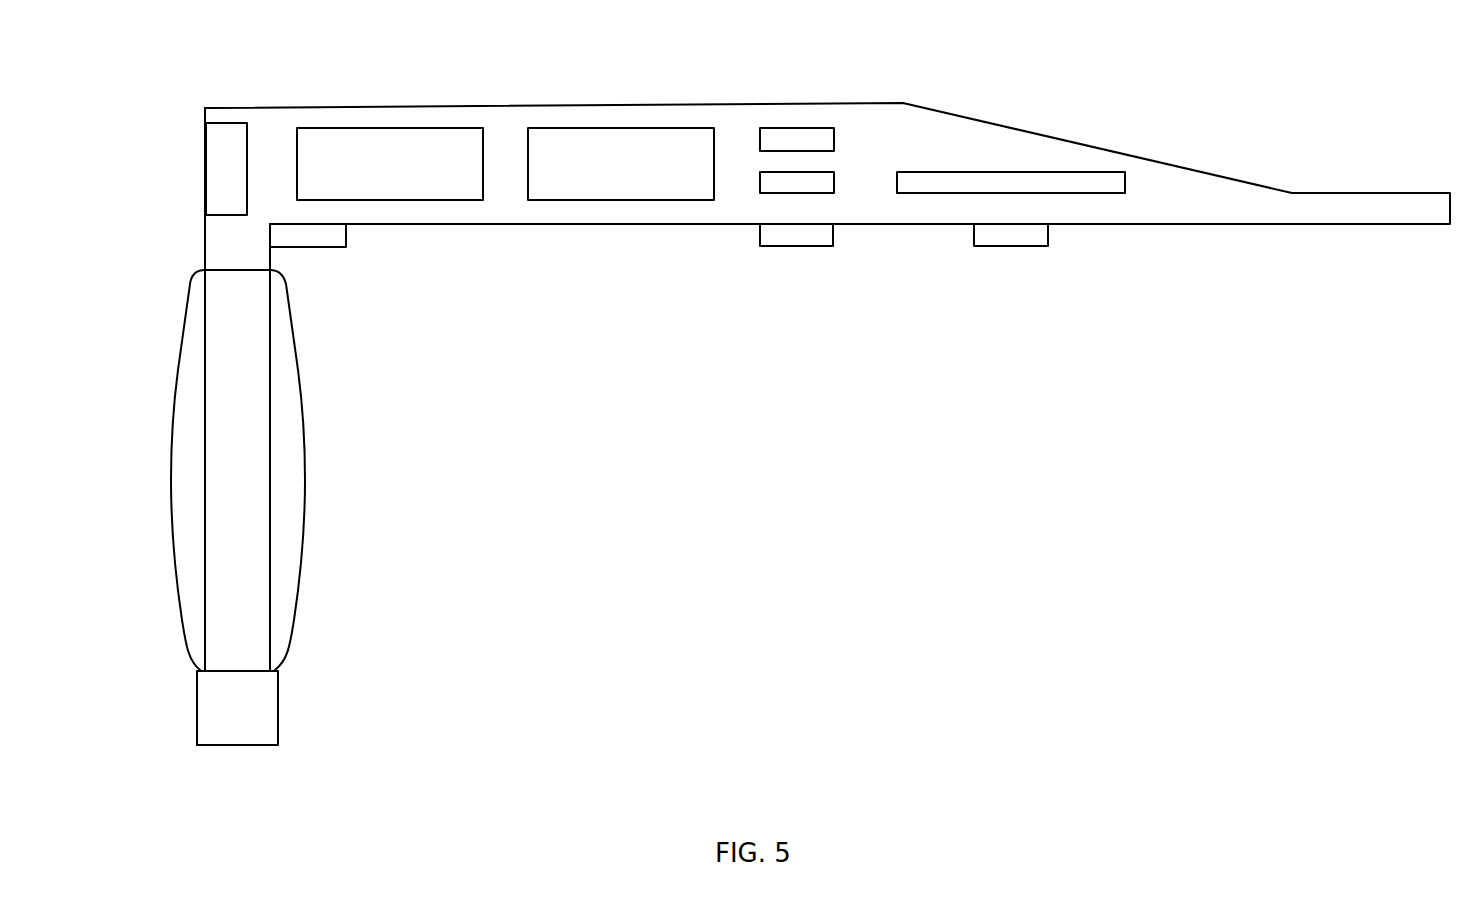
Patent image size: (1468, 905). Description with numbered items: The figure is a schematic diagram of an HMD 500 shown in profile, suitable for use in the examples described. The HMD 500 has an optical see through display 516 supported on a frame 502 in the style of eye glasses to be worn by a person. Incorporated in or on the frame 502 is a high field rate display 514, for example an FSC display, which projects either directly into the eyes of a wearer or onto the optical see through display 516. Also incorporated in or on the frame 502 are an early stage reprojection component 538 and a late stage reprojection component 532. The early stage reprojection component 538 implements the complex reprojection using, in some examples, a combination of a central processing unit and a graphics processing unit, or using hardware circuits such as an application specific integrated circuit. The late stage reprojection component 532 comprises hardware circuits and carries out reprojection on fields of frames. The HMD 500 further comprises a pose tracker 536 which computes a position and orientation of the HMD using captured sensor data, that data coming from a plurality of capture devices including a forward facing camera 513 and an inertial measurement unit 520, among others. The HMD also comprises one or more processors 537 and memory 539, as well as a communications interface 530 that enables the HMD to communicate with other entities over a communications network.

The HMD 500 is at (714, 554).
The frame 502 is at (263, 127).
The forward facing camera 513 is at (225, 157).
The high field rate display 514 is at (219, 316).
The optical see through display 516 is at (187, 413).
The inertial measurement unit 520 is at (813, 238).
The communications interface 530 is at (1022, 238).
The late stage reprojection component 532 is at (837, 180).
The pose tracker 536 is at (397, 148).
The processors 537 is at (650, 153).
The early stage reprojection component 538 is at (818, 127).
The memory 539 is at (1025, 170).